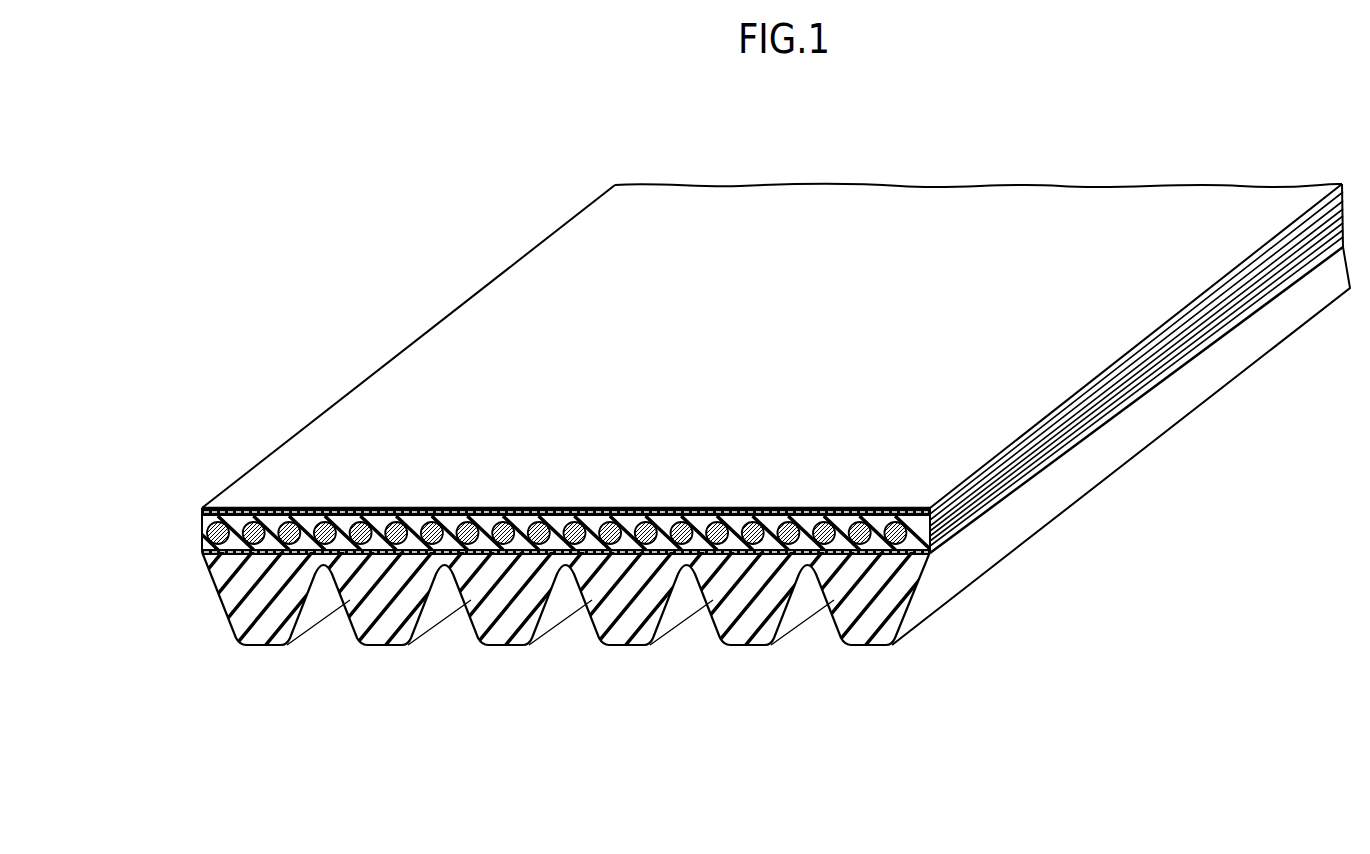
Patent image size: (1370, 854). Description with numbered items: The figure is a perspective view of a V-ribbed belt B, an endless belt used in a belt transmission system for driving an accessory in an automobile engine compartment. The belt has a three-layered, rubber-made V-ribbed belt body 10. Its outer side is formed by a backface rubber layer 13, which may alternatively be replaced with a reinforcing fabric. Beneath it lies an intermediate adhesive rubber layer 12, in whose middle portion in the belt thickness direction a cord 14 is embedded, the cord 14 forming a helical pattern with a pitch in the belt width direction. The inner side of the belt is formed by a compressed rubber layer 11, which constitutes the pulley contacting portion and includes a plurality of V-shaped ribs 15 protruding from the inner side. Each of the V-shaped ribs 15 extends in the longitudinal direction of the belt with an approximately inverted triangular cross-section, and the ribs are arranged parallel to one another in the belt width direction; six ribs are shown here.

The V-ribbed belt B is at (512, 190).
The V-ribbed belt body 10 is at (123, 478).
The compressed rubber layer 11 is at (225, 568).
The adhesive rubber layer 12 is at (212, 540).
The backface rubber layer 13 is at (207, 511).
The cord 14 is at (378, 508).
The V-shaped ribs 15 is at (266, 632).